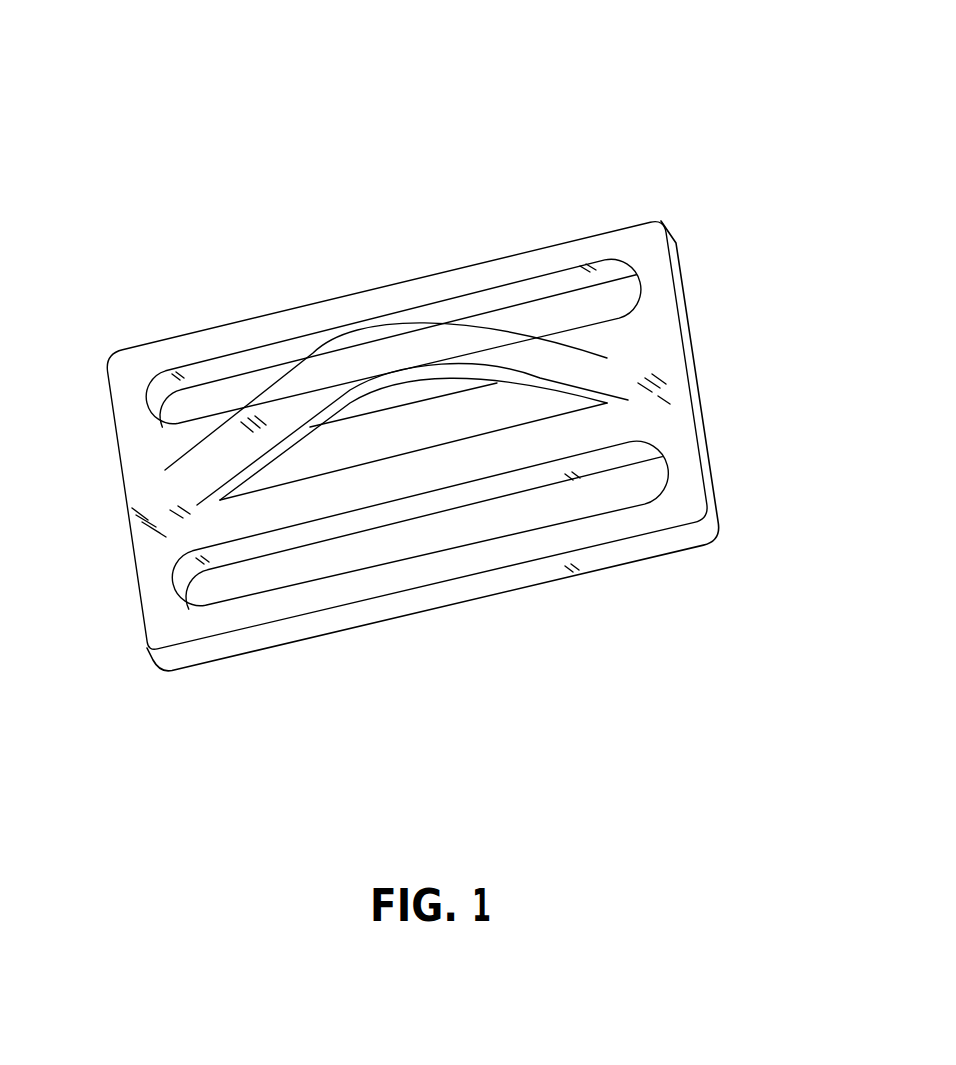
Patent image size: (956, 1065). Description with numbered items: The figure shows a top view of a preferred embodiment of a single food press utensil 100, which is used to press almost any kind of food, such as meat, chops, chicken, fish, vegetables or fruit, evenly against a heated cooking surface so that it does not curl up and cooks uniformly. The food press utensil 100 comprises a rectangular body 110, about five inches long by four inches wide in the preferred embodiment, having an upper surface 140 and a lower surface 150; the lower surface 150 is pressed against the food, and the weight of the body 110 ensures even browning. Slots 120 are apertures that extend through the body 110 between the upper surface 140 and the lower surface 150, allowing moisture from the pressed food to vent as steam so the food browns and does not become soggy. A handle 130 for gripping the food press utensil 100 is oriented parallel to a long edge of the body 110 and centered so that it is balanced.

The food press utensil 100 is at (330, 72).
The body 110 is at (703, 410).
The slots 120 is at (530, 310).
The handle 130 is at (560, 342).
The upper surface 140 is at (157, 600).
The lower surface 150 is at (299, 652).